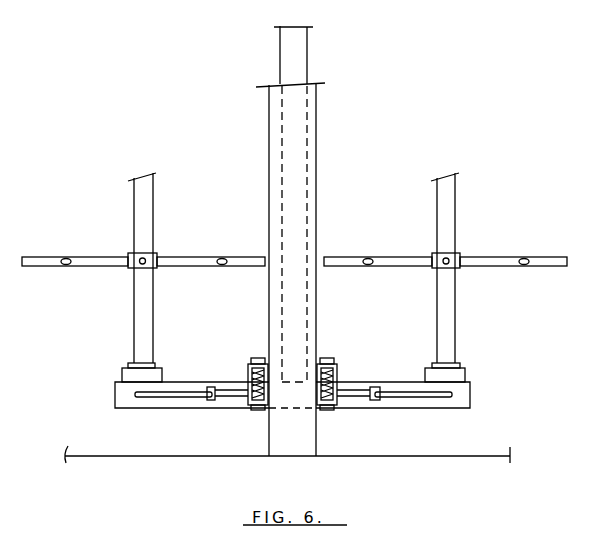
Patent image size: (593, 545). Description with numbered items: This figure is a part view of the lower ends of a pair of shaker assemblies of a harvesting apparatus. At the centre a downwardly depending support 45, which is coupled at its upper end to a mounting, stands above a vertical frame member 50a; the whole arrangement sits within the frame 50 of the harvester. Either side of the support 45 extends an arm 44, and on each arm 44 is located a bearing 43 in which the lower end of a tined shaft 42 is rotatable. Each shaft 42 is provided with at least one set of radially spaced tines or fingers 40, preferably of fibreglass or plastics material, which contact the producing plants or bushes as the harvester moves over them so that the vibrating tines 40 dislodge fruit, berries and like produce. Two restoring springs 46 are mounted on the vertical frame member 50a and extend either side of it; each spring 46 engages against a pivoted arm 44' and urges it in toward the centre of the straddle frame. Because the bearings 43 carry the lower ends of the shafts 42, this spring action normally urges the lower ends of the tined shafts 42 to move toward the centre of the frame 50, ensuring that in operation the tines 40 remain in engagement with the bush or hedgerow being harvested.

The downwardly depending support 45 is at (293, 47).
The vertical frame member 50a is at (312, 313).
The shaft 42 is at (140, 203).
The radially spaced tines or fingers 40 is at (82, 257).
The bearings 43 is at (122, 376).
The arm 44 is at (286, 408).
The pivoted arms 44' is at (293, 414).
The restoring springs 46 is at (226, 397).
The frame 50 is at (287, 469).